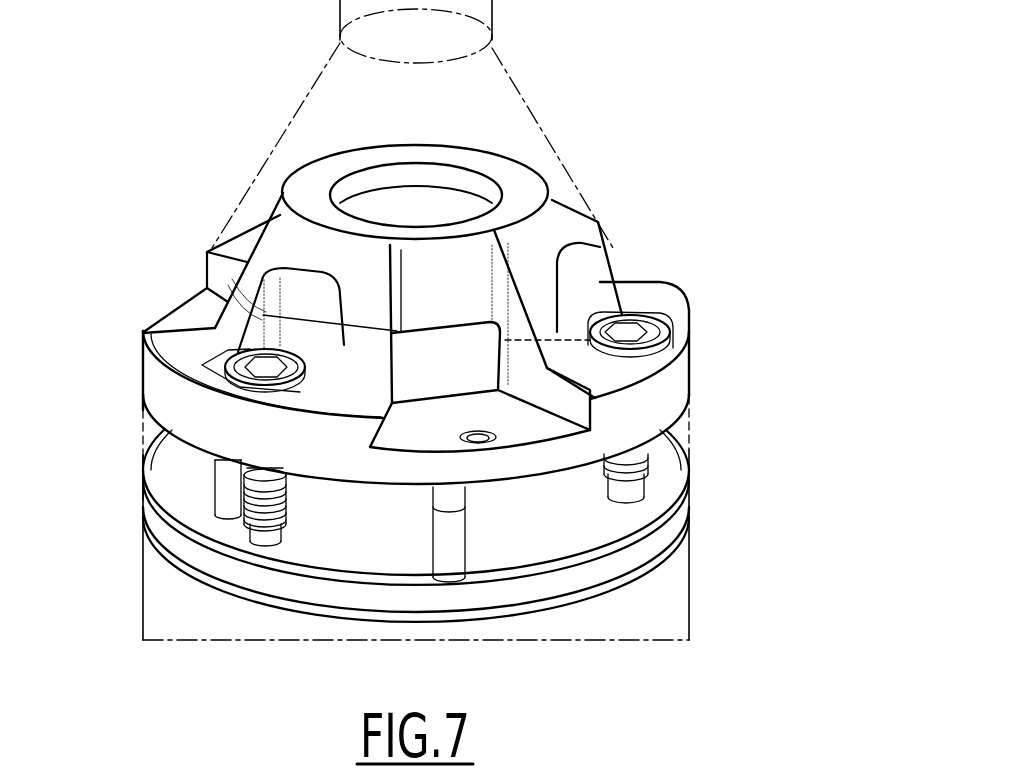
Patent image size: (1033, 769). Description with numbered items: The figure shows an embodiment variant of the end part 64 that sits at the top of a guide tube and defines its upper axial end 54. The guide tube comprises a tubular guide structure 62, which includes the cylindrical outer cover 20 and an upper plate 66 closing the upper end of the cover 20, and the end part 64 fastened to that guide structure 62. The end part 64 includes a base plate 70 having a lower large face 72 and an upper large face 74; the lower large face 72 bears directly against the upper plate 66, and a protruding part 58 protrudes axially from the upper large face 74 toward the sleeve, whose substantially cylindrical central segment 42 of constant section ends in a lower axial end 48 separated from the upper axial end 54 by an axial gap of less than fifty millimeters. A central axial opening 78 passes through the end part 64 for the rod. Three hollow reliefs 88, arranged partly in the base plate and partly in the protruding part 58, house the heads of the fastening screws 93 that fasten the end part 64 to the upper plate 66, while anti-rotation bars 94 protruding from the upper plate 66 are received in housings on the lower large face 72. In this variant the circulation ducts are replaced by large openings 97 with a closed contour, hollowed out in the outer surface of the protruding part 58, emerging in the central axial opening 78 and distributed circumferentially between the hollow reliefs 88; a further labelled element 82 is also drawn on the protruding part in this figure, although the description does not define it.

The cylindrical outer cover 20 is at (663, 603).
The central segment 42 is at (493, 20).
The lower axial end 48 is at (583, 195).
The upper axial end 54 is at (726, 405).
The protruding part 58 is at (347, 378).
The tubular guide structure 62 is at (727, 477).
The end part 64 is at (727, 287).
The upper plate 66 is at (143, 447).
The base plate 70 is at (133, 367).
The lower large face 72 is at (146, 410).
The upper large face 74 is at (193, 304).
The central axial opening 78 is at (397, 178).
The wedge block 82 is at (383, 462).
The hollow reliefs 88 is at (687, 350).
The fastening screws 93 is at (665, 350).
The anti-rotation bars 94 is at (245, 500).
The openings 97 is at (499, 352).